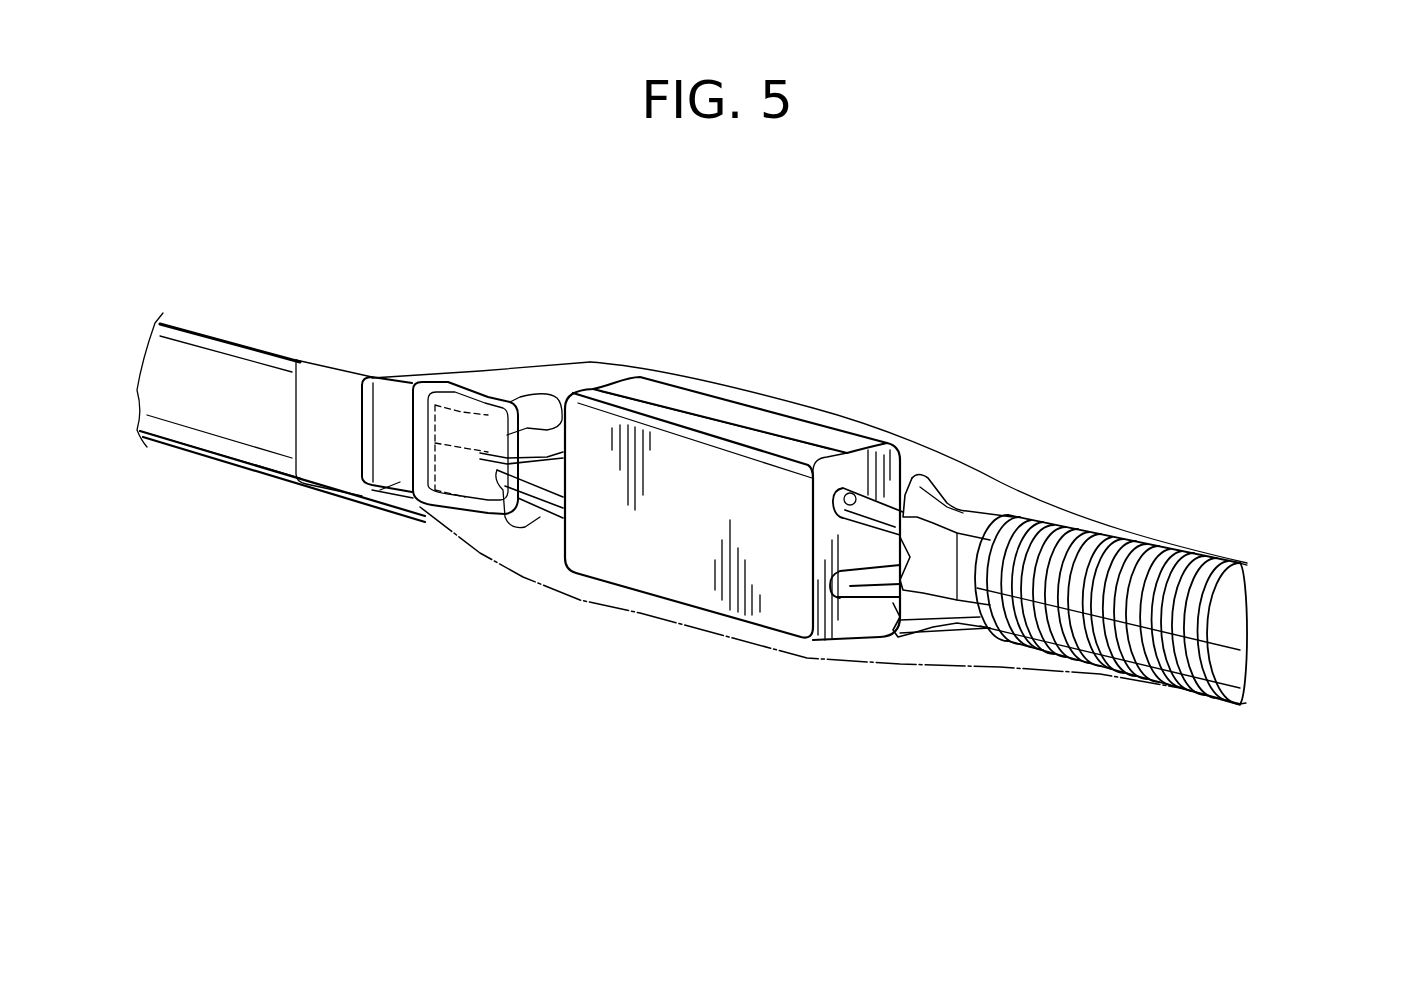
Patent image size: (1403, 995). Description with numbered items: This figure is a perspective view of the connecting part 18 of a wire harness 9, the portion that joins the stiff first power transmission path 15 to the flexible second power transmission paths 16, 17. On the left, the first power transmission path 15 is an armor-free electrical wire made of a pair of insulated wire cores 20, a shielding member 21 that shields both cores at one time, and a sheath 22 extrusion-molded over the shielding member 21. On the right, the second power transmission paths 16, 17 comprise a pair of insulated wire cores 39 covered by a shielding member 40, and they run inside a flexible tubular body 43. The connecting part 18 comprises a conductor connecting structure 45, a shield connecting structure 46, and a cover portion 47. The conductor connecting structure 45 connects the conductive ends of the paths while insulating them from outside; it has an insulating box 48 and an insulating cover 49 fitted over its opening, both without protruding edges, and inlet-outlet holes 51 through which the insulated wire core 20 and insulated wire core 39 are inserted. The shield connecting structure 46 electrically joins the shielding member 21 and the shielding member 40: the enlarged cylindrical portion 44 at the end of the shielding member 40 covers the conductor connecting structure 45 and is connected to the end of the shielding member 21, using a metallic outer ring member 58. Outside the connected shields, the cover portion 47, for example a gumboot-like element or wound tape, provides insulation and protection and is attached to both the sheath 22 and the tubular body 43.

The wire harness 9 is at (1190, 253).
The first power transmission path 15 is at (216, 338).
The second power transmission path 16 is at (1246, 562).
The second power transmission path 17 is at (1297, 488).
The connecting part 18 is at (833, 396).
The insulated wire core 20 is at (566, 418).
The shielding member 21 is at (433, 490).
The sheath 22 is at (219, 437).
The insulated wire core 39 is at (985, 510).
The shielding member 40 is at (970, 500).
The tubular body 43 is at (1173, 683).
The enlarged cylindrical portion 44 is at (489, 383).
The conductor connecting structure 45 is at (690, 610).
The shield connecting structure 46 is at (400, 484).
The cover portion 47 is at (603, 613).
The insulating box 48 is at (727, 413).
The insulating cover 49 is at (667, 453).
The inlet-outlet holes 51 is at (877, 507).
The metallic outer ring member 58 is at (400, 383).